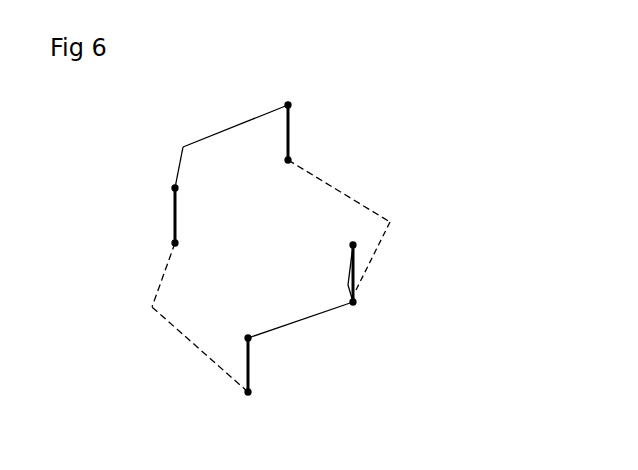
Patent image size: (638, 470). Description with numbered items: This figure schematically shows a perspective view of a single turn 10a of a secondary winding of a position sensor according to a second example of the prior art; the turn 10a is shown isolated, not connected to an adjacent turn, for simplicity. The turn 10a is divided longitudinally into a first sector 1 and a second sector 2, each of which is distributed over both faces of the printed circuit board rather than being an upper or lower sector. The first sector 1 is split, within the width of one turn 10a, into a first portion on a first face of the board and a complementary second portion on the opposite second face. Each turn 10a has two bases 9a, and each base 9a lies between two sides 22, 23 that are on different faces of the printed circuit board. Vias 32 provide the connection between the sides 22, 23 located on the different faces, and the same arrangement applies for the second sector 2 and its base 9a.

The first sector 1 is at (337, 190).
The second sector 2 is at (383, 240).
The base 9a is at (173, 160).
The turn 10a is at (393, 218).
The side 22 is at (233, 127).
The side 23 is at (163, 277).
The via 32 is at (290, 132).